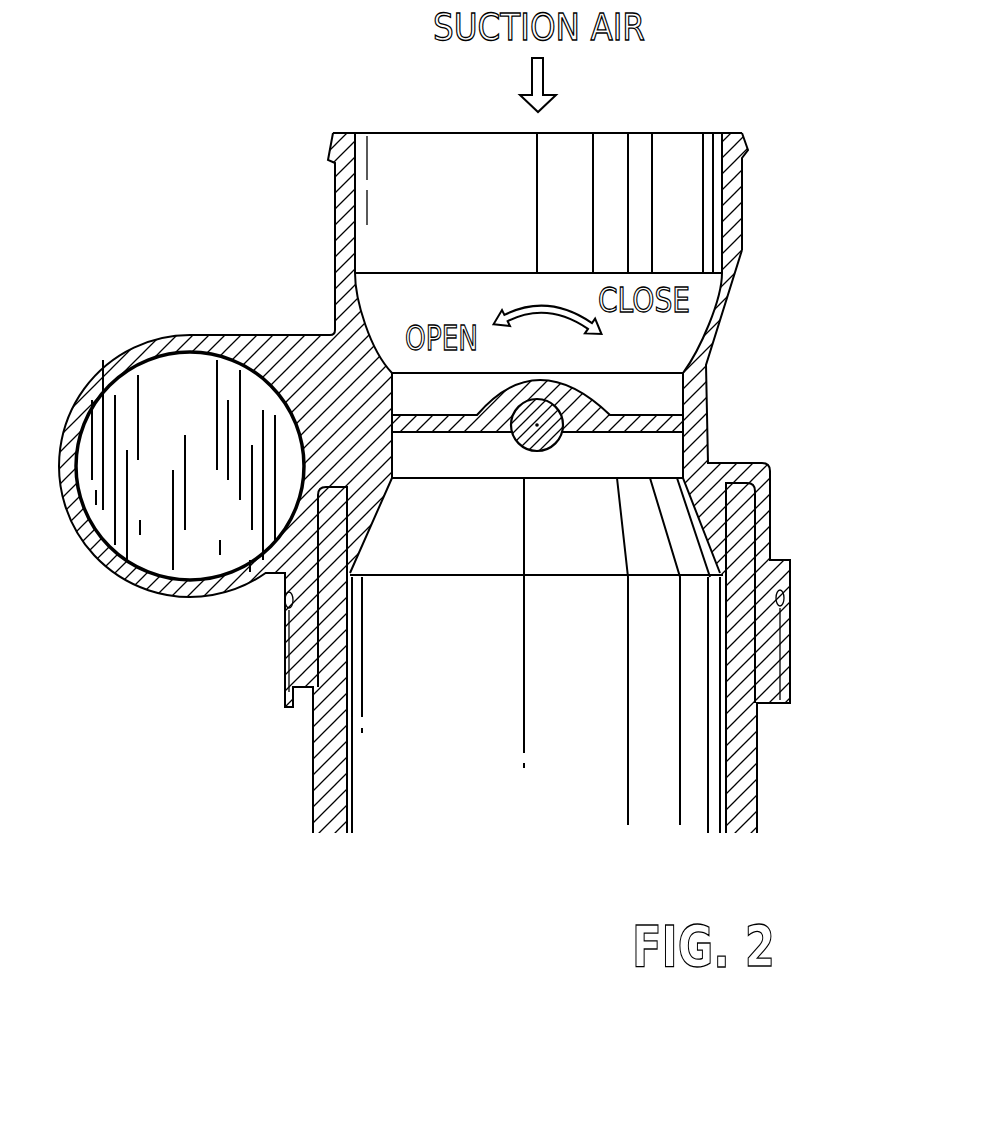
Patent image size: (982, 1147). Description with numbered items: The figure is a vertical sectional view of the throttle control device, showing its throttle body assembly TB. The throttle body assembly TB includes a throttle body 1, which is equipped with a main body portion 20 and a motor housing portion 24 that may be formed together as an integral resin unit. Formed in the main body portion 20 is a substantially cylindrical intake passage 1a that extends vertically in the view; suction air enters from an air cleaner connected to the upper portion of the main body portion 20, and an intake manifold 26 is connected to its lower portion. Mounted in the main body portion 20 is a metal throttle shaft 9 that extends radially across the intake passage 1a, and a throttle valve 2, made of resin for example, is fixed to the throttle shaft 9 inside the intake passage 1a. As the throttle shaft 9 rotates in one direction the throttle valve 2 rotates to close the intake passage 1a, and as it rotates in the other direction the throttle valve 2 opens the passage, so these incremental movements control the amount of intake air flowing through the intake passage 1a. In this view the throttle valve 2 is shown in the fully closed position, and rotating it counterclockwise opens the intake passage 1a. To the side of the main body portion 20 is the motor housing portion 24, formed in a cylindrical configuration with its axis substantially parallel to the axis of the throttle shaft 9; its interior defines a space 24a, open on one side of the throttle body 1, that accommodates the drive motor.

The throttle body 1 is at (749, 229).
The intake passage 1a is at (669, 187).
The throttle body assembly TB is at (767, 151).
The throttle valve 2 is at (438, 433).
The throttle shaft 9 is at (567, 437).
The main body portion 20 is at (698, 400).
The motor housing portion 24 is at (85, 374).
The space 24a is at (172, 392).
The intake manifold 26 is at (305, 797).